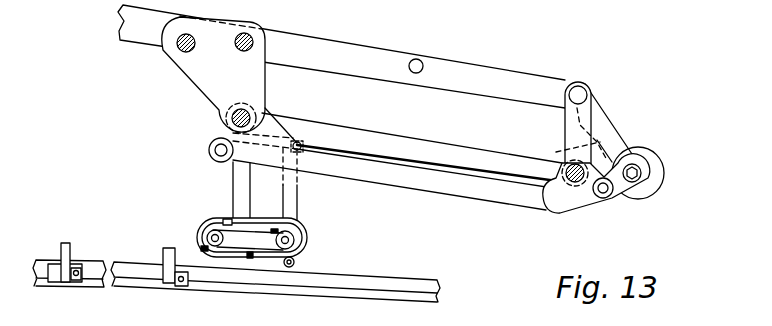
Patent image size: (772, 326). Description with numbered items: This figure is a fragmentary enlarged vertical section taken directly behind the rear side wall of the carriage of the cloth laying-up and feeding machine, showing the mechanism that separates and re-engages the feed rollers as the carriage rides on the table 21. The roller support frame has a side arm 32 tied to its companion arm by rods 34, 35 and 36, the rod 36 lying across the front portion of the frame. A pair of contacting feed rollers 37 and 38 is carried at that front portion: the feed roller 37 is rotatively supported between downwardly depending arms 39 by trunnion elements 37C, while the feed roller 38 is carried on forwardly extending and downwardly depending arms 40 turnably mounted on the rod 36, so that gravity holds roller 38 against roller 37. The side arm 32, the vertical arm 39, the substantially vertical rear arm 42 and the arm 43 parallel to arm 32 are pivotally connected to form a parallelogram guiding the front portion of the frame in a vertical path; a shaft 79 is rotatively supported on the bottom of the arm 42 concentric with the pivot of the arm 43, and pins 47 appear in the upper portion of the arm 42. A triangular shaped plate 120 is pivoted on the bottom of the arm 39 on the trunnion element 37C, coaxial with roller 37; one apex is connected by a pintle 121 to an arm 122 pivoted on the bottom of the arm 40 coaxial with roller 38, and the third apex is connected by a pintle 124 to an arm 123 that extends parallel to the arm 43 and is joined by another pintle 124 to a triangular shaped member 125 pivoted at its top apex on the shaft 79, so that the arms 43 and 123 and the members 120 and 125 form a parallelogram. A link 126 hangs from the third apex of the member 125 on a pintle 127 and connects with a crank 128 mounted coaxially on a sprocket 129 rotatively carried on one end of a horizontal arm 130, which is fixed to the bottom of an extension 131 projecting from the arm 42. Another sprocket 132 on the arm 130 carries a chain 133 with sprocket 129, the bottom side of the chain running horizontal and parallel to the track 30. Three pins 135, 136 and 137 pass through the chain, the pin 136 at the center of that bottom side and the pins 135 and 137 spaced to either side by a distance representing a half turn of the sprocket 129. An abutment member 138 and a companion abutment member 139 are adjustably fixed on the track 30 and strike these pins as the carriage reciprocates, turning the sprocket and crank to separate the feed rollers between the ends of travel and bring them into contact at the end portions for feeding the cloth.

The table 21 is at (140, 284).
The track 30 is at (224, 277).
The side arm 32 is at (370, 52).
The rod 34 is at (249, 37).
The rod 35 is at (417, 65).
The rod 36 is at (578, 93).
The feed roller 37 is at (563, 147).
The trunnion element 37C is at (560, 162).
The feed roller 38 is at (647, 162).
The depending arm 39 is at (586, 119).
The forwardly extending arm 40 is at (600, 112).
The rear arm 42 is at (262, 79).
The arm 43 is at (446, 145).
The pivot pin 47 is at (180, 47).
The shaft 79 is at (249, 112).
The triangular shaped plate 120 is at (575, 209).
The pintle 121 is at (603, 198).
The arm 122 is at (625, 193).
The arm 123 is at (415, 182).
The pintle 124 is at (213, 148).
The triangular shaped member 125 is at (215, 135).
The link 126 is at (291, 205).
The pintle 127 is at (299, 144).
The crank 128 is at (296, 262).
The sprocket 129 is at (300, 240).
The horizontal arm 130 is at (260, 240).
The extension 131 is at (235, 175).
The sprocket 132 is at (206, 225).
The chain 133 is at (298, 230).
The pin 135 is at (228, 219).
The pin 136 is at (203, 247).
The pin 137 is at (249, 258).
The abutment member 138 is at (69, 252).
The stop block 139 is at (164, 255).